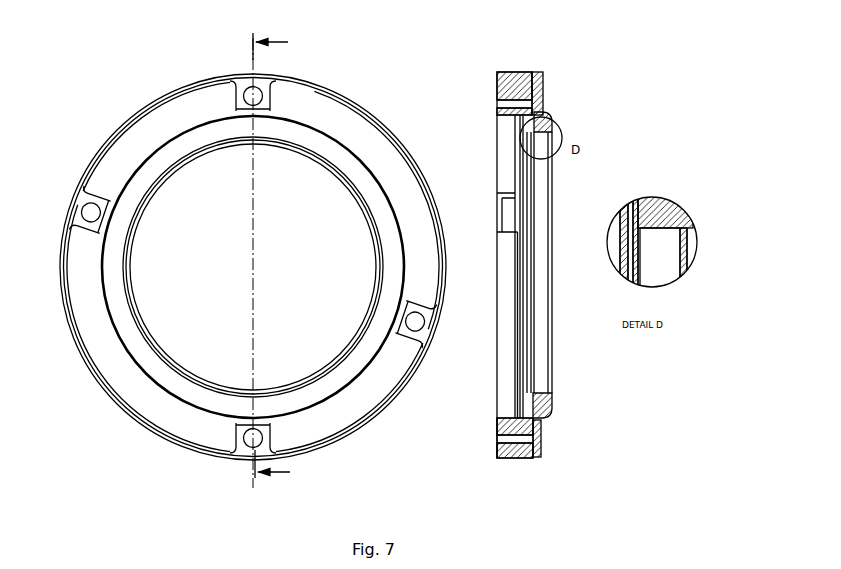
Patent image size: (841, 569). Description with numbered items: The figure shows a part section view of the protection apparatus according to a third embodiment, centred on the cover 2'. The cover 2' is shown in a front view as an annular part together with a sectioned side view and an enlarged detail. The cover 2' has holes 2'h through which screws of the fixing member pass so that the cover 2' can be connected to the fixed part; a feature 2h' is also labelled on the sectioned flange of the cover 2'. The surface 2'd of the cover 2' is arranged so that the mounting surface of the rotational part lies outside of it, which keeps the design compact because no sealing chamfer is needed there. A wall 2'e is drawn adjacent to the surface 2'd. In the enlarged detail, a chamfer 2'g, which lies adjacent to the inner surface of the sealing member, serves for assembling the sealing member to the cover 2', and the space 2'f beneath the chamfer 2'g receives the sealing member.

The cover 2' is at (253, 253).
The holes 2'h is at (90, 160).
The flange 2h' is at (530, 69).
The surface 2'd is at (579, 266).
The outer wall 2'e is at (626, 262).
The chamfer 2'g is at (613, 166).
The space 2'f is at (667, 301).